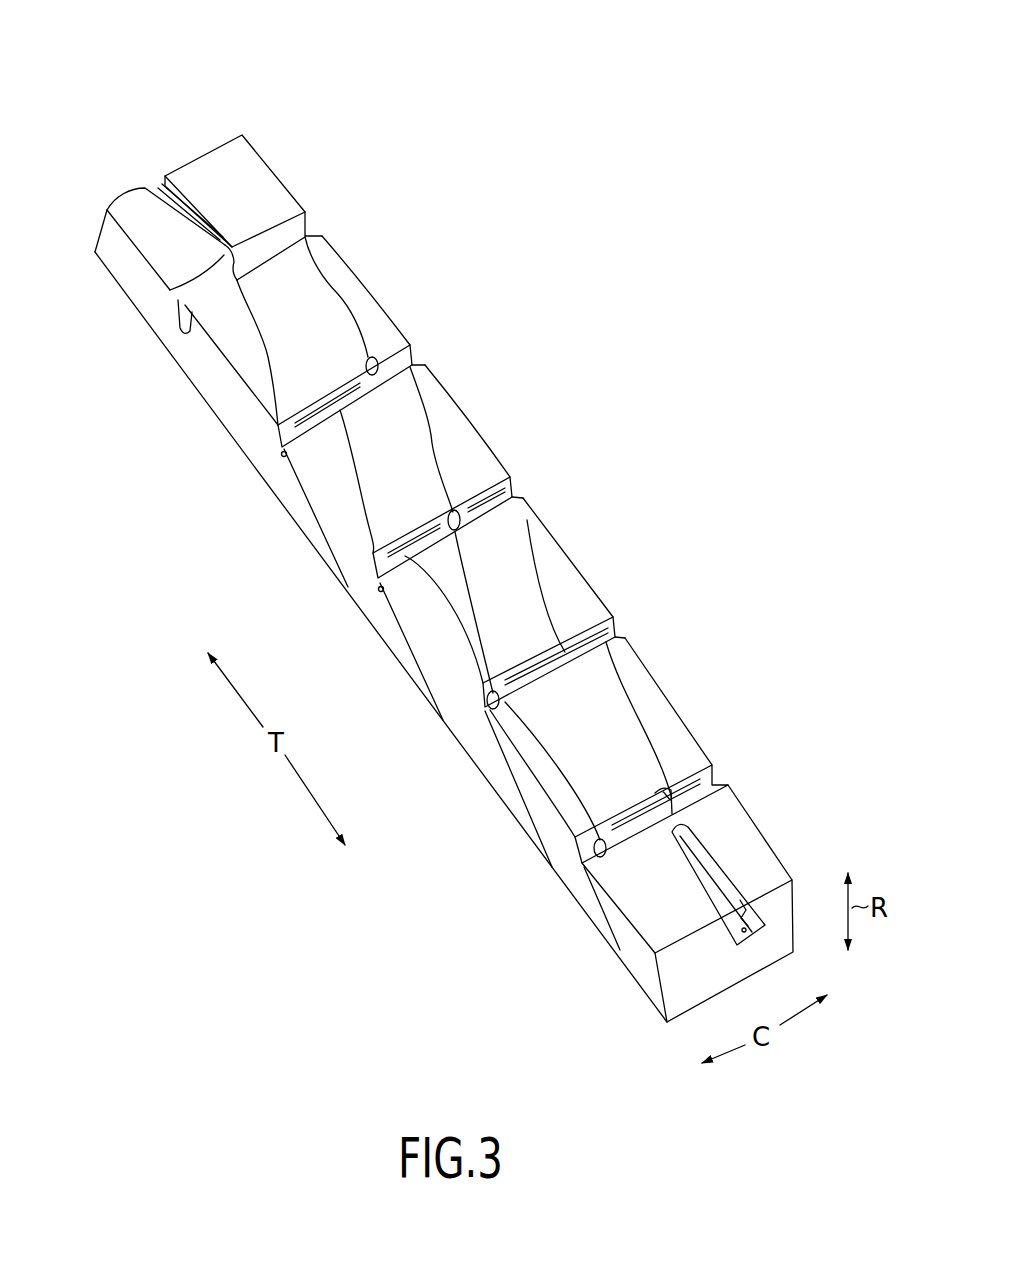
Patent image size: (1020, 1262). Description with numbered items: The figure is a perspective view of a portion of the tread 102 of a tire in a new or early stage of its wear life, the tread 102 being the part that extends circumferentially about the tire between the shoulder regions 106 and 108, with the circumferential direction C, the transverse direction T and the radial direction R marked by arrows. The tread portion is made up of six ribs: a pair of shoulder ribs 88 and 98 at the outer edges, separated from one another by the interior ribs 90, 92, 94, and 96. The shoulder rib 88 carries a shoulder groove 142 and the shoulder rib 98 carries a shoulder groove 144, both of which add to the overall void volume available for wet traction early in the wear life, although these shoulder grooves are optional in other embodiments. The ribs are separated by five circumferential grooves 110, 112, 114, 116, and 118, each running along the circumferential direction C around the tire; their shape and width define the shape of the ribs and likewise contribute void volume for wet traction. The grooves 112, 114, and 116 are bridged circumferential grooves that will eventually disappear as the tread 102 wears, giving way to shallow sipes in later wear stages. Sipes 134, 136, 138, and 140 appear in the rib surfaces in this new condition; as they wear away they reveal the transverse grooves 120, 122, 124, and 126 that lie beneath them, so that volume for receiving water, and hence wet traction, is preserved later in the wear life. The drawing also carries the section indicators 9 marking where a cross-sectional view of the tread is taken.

The section line 9- 9 is at (443, 347).
The shoulder rib 88 is at (132, 215).
The interior rib 90 is at (240, 355).
The interior rib 92 is at (342, 497).
The interior rib 94 is at (567, 568).
The interior rib 96 is at (667, 710).
The shoulder rib 98 is at (640, 906).
The tread 102 is at (255, 103).
The shoulder region 106 is at (75, 247).
The shoulder region 108 is at (660, 1030).
The circumferential groove 110 is at (320, 222).
The bridged circumferential groove 112 is at (430, 360).
The bridged circumferential groove 114 is at (526, 490).
The bridged circumferential groove 116 is at (625, 627).
The circumferential groove 118 is at (724, 776).
The transverse groove 120 is at (382, 352).
The transverse groove 122 is at (458, 522).
The transverse groove 124 is at (508, 703).
The transverse groove 126 is at (608, 848).
The sipe 134 is at (340, 293).
The sipe 136 is at (442, 432).
The sipe 138 is at (472, 612).
The sipe 140 is at (562, 768).
The shoulder groove 142 is at (185, 198).
The shoulder groove 144 is at (735, 868).